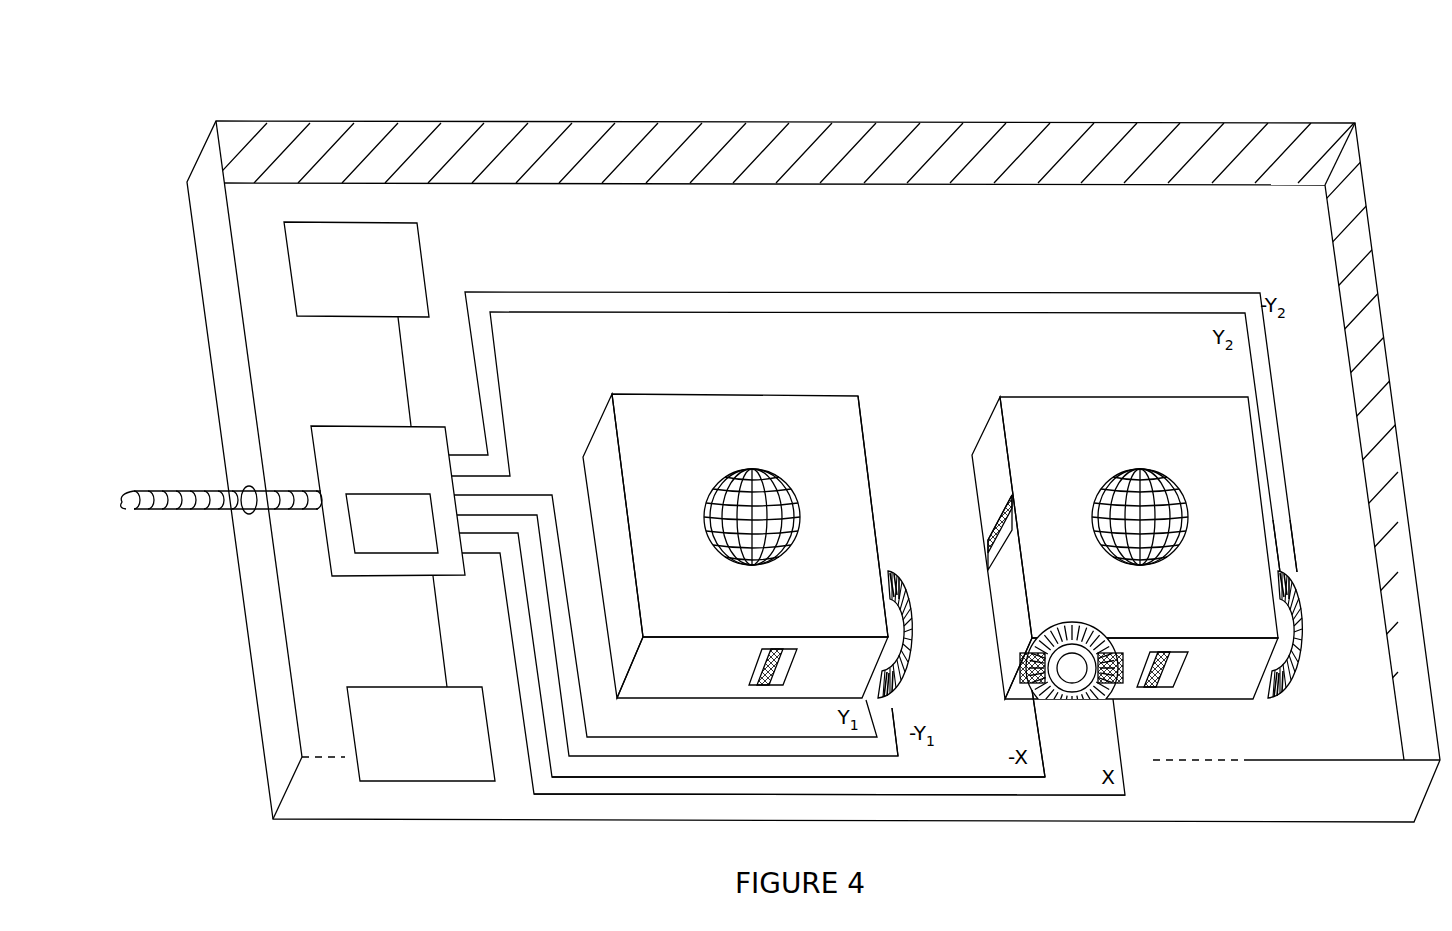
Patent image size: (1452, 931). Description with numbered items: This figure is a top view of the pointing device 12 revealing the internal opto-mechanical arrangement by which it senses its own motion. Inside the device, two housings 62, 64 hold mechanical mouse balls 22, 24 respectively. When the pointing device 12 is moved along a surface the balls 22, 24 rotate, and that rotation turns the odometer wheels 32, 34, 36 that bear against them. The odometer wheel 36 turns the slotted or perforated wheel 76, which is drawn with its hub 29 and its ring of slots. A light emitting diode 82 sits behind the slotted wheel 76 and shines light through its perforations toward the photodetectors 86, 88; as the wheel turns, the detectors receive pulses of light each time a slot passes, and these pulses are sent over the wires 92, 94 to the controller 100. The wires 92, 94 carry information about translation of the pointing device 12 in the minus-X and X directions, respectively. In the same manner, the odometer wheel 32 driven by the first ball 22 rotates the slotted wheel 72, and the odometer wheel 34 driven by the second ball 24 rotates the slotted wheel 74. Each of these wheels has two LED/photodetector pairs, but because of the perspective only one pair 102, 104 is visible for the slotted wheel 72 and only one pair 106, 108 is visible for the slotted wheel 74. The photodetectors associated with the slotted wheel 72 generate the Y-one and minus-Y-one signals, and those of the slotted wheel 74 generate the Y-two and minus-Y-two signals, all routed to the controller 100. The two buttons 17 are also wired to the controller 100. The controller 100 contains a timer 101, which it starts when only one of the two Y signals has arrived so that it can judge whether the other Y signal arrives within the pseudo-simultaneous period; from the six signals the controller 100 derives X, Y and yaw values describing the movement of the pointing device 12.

The pointing device 12 is at (1142, 84).
The buttons 17 is at (424, 258).
The controller 100 is at (394, 426).
The timer 101 is at (392, 553).
The housing 62 is at (675, 395).
The mouse ball 22 is at (755, 469).
The odometer wheel 32 is at (762, 668).
The slotted wheel 72 is at (903, 580).
The LED/photodetector pair element 102 is at (887, 637).
The LED/photodetector pair element 104 is at (905, 672).
The housing 64 is at (1065, 397).
The mouse ball 24 is at (1145, 470).
The odometer wheel 36 is at (995, 525).
The slotted wheel 76 is at (1063, 622).
The wheel hub 29 is at (1115, 640).
The LED 82 is at (1022, 652).
The photodetector 86 is at (1030, 682).
The photodetector 88 is at (1120, 683).
The odometer wheel 34 is at (1178, 670).
The slotted wheel 74 is at (1305, 600).
The LED/photodetector pair element 106 is at (1272, 695).
The LED/photodetector pair element 108 is at (1303, 675).
The wire 92 is at (942, 774).
The wire 94 is at (957, 796).